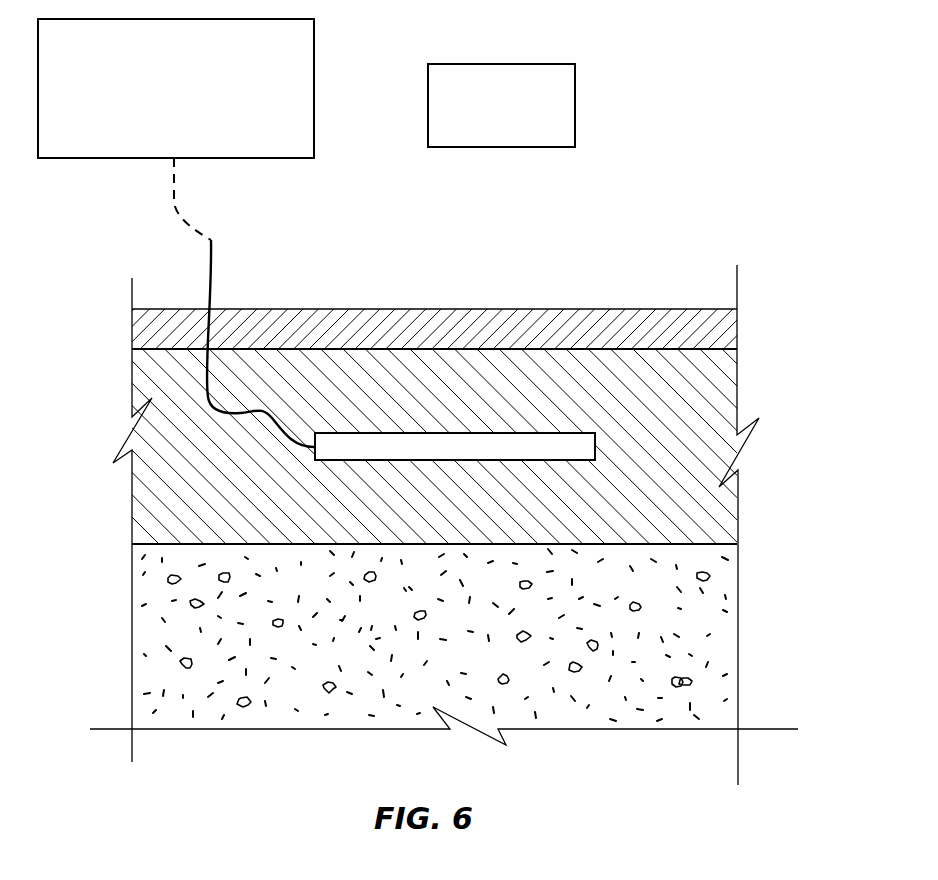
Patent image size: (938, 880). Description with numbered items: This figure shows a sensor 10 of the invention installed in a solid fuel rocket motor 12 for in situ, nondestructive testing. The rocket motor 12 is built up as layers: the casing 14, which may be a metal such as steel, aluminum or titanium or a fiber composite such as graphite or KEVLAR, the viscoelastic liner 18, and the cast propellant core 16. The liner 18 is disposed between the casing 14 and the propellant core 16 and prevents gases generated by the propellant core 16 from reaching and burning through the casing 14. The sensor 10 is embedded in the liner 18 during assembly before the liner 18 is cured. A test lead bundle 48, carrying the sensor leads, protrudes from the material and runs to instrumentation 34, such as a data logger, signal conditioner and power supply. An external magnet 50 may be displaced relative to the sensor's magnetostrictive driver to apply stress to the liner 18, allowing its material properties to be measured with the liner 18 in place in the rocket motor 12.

The sensor 10 is at (489, 447).
The solid fuel rocket motor 12 is at (402, 283).
The casing 14 is at (155, 325).
The cast propellant core 16 is at (183, 632).
The viscoelastic liner 18 is at (698, 383).
The instrumentation 34 is at (176, 88).
The test lead bundle 48 is at (212, 285).
The external magnet 50 is at (501, 105).